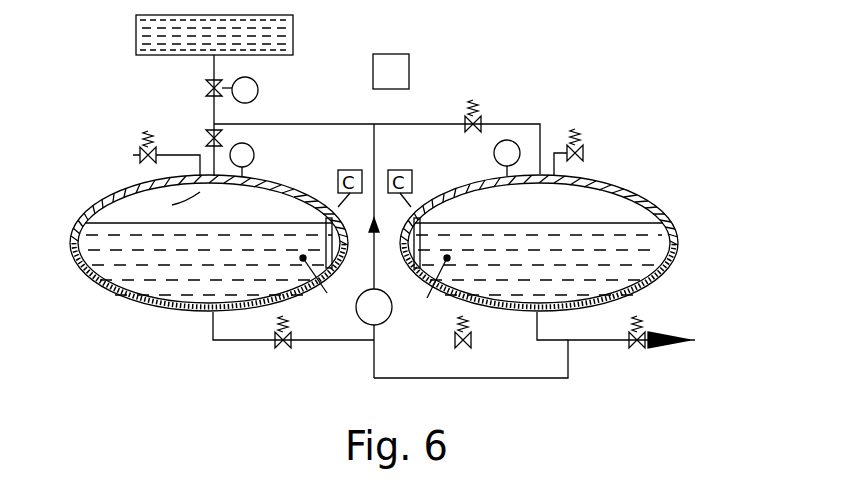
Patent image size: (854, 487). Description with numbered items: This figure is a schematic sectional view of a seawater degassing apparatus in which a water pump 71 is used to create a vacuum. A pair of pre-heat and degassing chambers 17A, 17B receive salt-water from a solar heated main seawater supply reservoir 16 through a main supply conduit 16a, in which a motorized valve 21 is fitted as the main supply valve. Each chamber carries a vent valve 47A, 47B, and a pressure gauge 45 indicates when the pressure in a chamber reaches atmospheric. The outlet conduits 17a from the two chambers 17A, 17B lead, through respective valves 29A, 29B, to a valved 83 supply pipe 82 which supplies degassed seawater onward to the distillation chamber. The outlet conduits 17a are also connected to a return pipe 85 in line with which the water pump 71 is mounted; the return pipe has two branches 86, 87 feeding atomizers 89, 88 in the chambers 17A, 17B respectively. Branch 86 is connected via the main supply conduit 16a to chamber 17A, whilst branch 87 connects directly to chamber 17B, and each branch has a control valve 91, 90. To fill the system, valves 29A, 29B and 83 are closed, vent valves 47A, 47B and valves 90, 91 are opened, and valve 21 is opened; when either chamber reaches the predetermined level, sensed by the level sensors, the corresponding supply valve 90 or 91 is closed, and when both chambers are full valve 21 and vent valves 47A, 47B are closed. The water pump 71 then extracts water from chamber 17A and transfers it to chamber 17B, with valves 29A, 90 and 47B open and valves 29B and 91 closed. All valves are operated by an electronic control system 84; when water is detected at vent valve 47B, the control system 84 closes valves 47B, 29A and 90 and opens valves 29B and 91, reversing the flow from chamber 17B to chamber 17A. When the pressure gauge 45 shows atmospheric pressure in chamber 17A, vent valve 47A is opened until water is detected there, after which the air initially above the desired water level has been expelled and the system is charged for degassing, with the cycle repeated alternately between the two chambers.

The salt-water reservoir 16 is at (293, 40).
The main supply conduit 16a is at (212, 110).
The motorized valve 21 is at (206, 86).
The branch 86 is at (318, 123).
The branch 87 is at (398, 123).
The control valve 91 is at (220, 135).
The pressure gauge 45 is at (254, 158).
The vent valve 47A is at (140, 152).
The vent valve 47B is at (585, 148).
The electronic control system 84 is at (409, 73).
The control valve 90 is at (480, 118).
The atomizer 88 is at (548, 192).
The atomizer 89 is at (169, 204).
The degassing chamber 17A is at (118, 293).
The degassing chamber 17B is at (652, 288).
The outlet conduit 17a is at (212, 340).
The valve 29A is at (278, 346).
The valve 29B is at (465, 346).
The water pump 71 is at (356, 312).
The return pipe 85 is at (373, 340).
The supply pipe 82 is at (596, 344).
The valve 83 is at (640, 350).